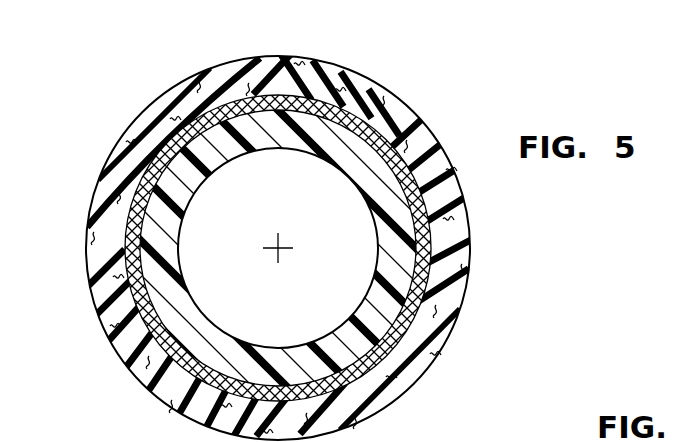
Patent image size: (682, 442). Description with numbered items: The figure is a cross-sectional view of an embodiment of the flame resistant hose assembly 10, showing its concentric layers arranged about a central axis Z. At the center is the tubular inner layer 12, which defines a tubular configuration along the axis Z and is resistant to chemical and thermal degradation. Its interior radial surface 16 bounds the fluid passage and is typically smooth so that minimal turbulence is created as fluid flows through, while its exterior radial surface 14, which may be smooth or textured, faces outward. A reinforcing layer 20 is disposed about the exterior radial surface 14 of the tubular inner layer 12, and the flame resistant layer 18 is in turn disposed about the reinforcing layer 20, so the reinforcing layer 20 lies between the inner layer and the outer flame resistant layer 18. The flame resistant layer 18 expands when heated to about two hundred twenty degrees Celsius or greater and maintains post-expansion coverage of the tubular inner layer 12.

The hose assembly 10 is at (149, 60).
The tubular inner layer 12 is at (349, 415).
The exterior radial surface 14 is at (432, 237).
The interior radial surface 16 is at (184, 243).
The flame resistant layer 18 is at (445, 311).
The reinforcing layer 20 is at (400, 118).
The axis Z is at (283, 244).